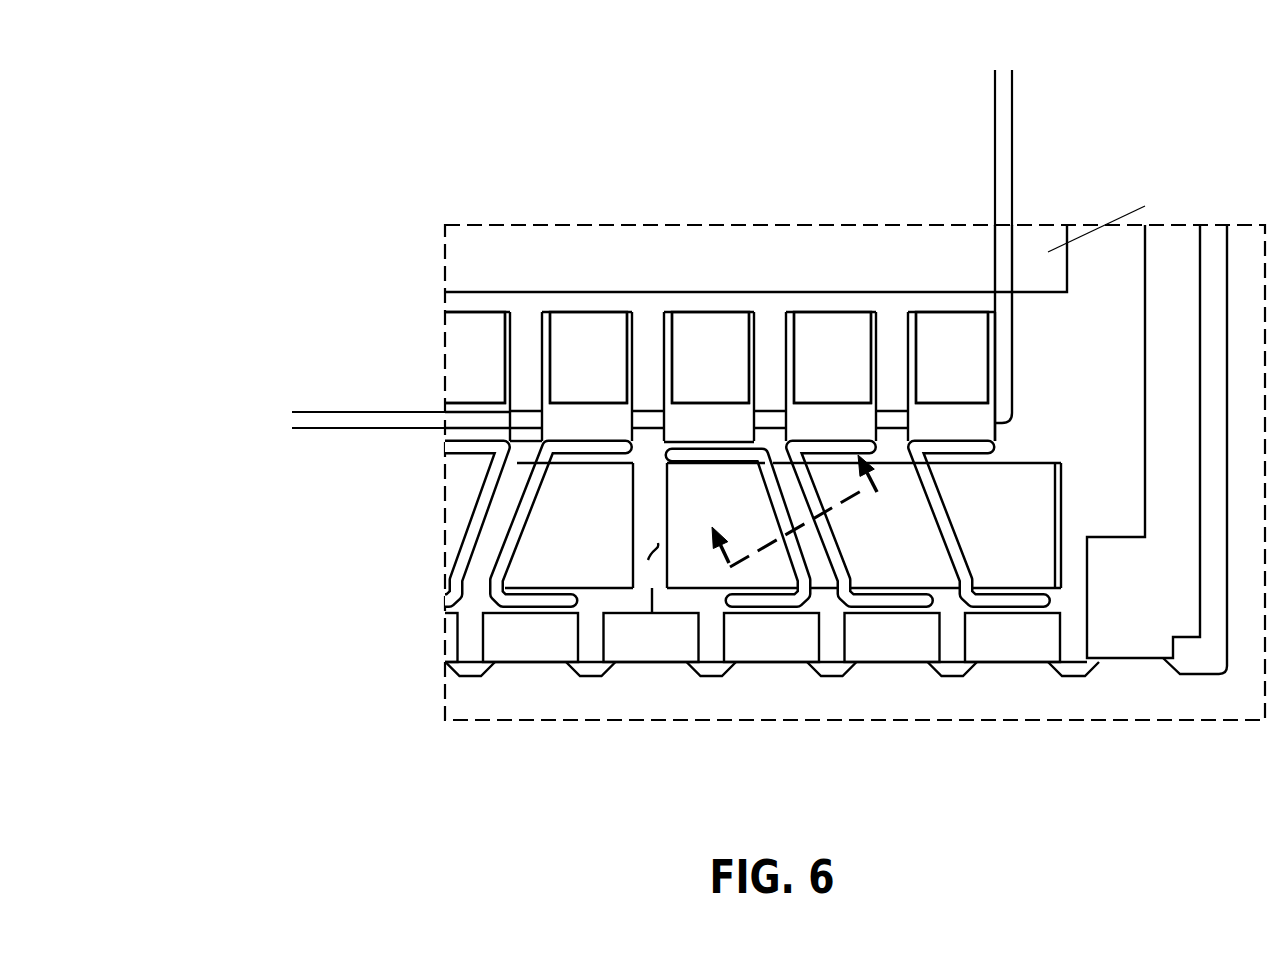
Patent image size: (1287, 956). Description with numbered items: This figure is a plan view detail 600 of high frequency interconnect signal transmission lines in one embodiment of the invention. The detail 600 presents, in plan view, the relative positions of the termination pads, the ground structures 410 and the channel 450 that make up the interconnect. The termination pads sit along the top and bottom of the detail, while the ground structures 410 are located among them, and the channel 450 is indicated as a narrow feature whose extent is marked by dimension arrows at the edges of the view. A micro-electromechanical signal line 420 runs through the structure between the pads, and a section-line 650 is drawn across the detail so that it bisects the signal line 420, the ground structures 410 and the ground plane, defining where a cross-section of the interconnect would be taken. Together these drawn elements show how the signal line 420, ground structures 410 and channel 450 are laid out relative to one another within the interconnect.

The detail 600 is at (253, 65).
The ground structures 410 is at (843, 488).
The channel 450 is at (917, 100).
The section-line 650 is at (772, 552).
The micro-electromechanical signal line 420 is at (785, 560).